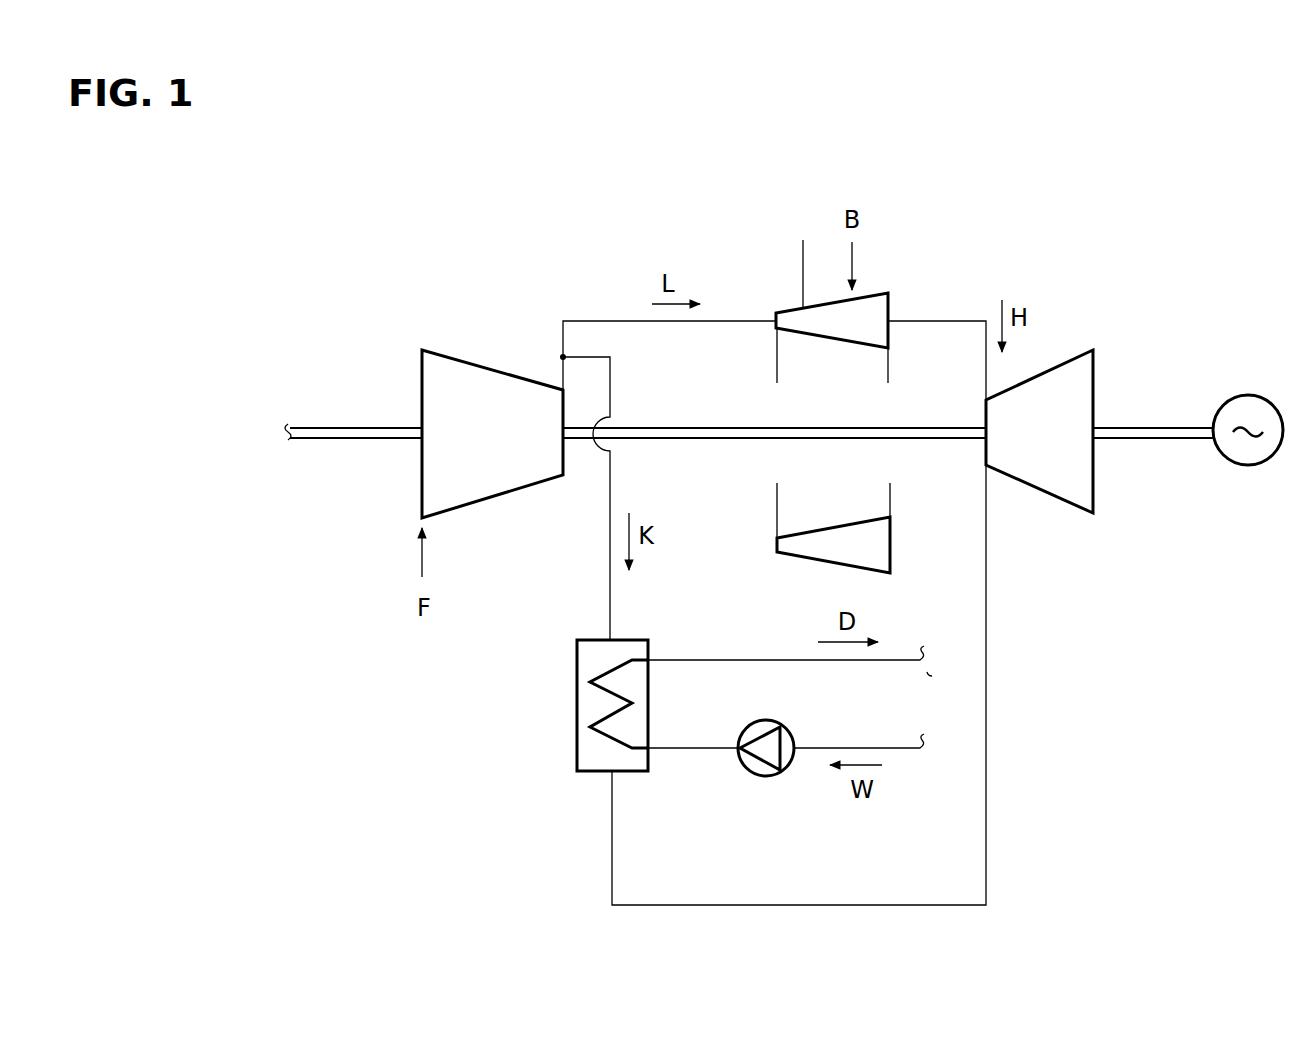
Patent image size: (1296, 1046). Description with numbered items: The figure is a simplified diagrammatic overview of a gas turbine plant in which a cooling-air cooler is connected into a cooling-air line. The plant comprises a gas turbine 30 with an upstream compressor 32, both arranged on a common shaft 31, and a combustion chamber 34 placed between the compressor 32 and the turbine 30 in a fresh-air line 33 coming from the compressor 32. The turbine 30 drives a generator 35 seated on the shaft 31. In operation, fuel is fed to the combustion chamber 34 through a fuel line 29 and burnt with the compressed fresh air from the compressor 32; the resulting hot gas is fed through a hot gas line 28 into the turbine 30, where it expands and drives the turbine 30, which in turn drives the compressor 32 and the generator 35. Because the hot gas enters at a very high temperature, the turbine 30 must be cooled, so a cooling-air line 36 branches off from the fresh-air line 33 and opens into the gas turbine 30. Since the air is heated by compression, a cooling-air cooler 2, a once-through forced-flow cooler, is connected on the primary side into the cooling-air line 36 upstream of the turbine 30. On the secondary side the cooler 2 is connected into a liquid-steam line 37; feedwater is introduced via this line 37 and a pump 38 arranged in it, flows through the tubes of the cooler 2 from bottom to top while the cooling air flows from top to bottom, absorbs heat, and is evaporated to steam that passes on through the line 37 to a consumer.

The cooling-air cooler 2 is at (597, 745).
The hot gas line 28 is at (952, 321).
The fuel line 29 is at (803, 270).
The gas turbine 30 is at (1061, 392).
The shaft 31 is at (332, 435).
The compressor 32 is at (468, 414).
The fresh-air line 33 is at (600, 321).
The combustion chamber 34 is at (872, 313).
The generator 35 is at (1248, 410).
The cooling-air line 36 is at (611, 572).
The liquid-steam line 37 is at (692, 748).
The pump 38 is at (765, 768).